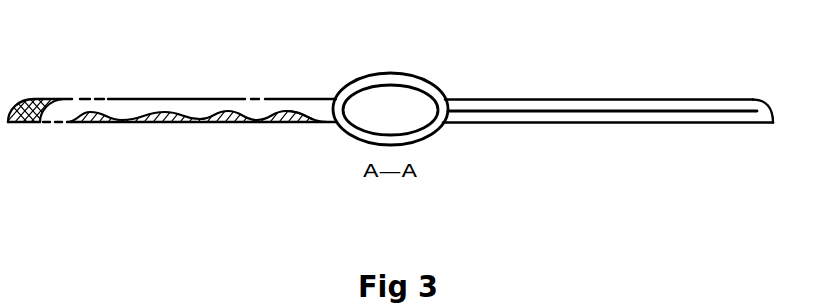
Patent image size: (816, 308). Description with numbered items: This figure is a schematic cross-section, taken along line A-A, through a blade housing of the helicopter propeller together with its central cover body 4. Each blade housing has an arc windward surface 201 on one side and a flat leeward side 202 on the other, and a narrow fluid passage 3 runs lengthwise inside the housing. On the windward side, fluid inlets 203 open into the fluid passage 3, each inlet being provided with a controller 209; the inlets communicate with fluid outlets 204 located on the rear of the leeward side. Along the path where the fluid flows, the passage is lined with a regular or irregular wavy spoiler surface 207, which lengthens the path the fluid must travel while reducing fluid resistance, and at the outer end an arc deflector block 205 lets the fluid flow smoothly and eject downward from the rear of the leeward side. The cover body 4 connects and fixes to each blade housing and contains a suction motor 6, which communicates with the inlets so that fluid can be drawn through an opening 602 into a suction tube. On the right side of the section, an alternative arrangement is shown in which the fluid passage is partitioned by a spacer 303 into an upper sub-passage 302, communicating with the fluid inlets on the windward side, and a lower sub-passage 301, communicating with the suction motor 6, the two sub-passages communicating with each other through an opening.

The arc windward surface 201 is at (198, 98).
The flat leeward side 202 is at (143, 122).
The fluid inlets 203 is at (257, 98).
The fluid outlets 204 is at (58, 123).
The arc deflector block 205 is at (44, 101).
The wavy spoiler surface 207 is at (233, 123).
The controller 209 is at (272, 98).
The fluid passage 3 is at (291, 104).
The cover body 4 is at (413, 75).
The suction motor 6 is at (441, 124).
The lower sub-passage 301 is at (527, 113).
The upper sub-passage 302 is at (528, 100).
The spacer 303 is at (582, 112).
The opening 602 is at (755, 103).